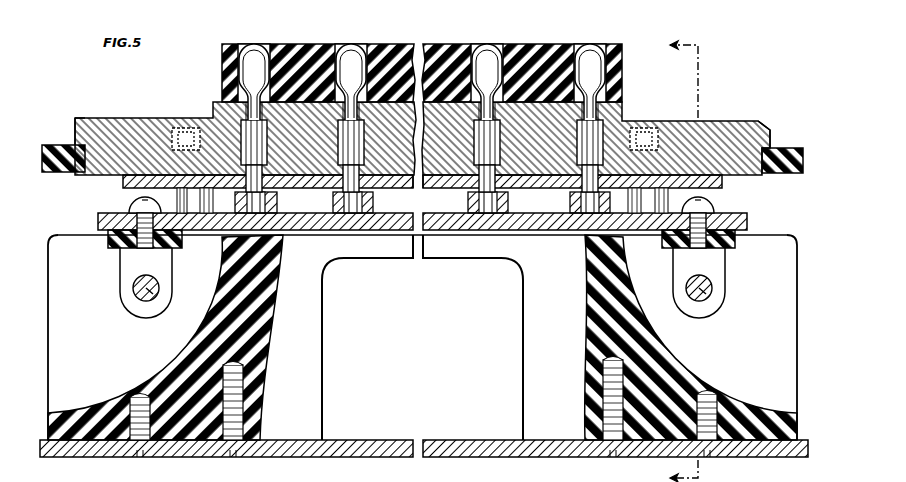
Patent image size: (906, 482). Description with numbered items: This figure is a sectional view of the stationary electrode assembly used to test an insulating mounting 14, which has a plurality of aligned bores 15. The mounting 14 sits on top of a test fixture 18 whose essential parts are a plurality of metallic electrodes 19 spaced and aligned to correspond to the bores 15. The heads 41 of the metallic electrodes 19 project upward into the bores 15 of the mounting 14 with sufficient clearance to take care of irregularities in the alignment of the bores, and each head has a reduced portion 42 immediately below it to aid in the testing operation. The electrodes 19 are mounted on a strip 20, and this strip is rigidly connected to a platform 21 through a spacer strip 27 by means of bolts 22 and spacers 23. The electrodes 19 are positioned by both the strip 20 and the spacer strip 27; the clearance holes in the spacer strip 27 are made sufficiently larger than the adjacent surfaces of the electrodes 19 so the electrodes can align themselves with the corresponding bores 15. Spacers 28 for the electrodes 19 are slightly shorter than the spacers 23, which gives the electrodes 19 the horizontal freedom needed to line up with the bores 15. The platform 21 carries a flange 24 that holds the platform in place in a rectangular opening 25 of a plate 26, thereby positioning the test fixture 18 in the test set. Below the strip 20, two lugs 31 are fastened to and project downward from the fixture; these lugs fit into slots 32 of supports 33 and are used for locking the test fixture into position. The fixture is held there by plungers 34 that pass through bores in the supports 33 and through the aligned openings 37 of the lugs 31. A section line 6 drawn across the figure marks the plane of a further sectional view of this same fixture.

The section line 6- 6 is at (684, 253).
The insulating mounting 14 is at (437, 47).
The bore 15 is at (246, 68).
The test fixture 18 is at (723, 114).
The metallic electrode 19 is at (245, 37).
The strip 20 is at (111, 216).
The platform 21 is at (125, 128).
The bolt 22 is at (186, 126).
The spacer 23 is at (192, 208).
The flange 24 is at (80, 128).
The rectangular opening 25 is at (745, 177).
The plate 26 is at (797, 172).
The spacer strip 27 is at (416, 188).
The electrode spacer 28 is at (336, 203).
The lug 31 is at (136, 306).
The slot 32 is at (62, 242).
The support 33 is at (548, 432).
The plunger 34 is at (140, 290).
The opening 37 is at (151, 298).
The electrode head 41 is at (262, 50).
The reduced portion 42 is at (250, 112).